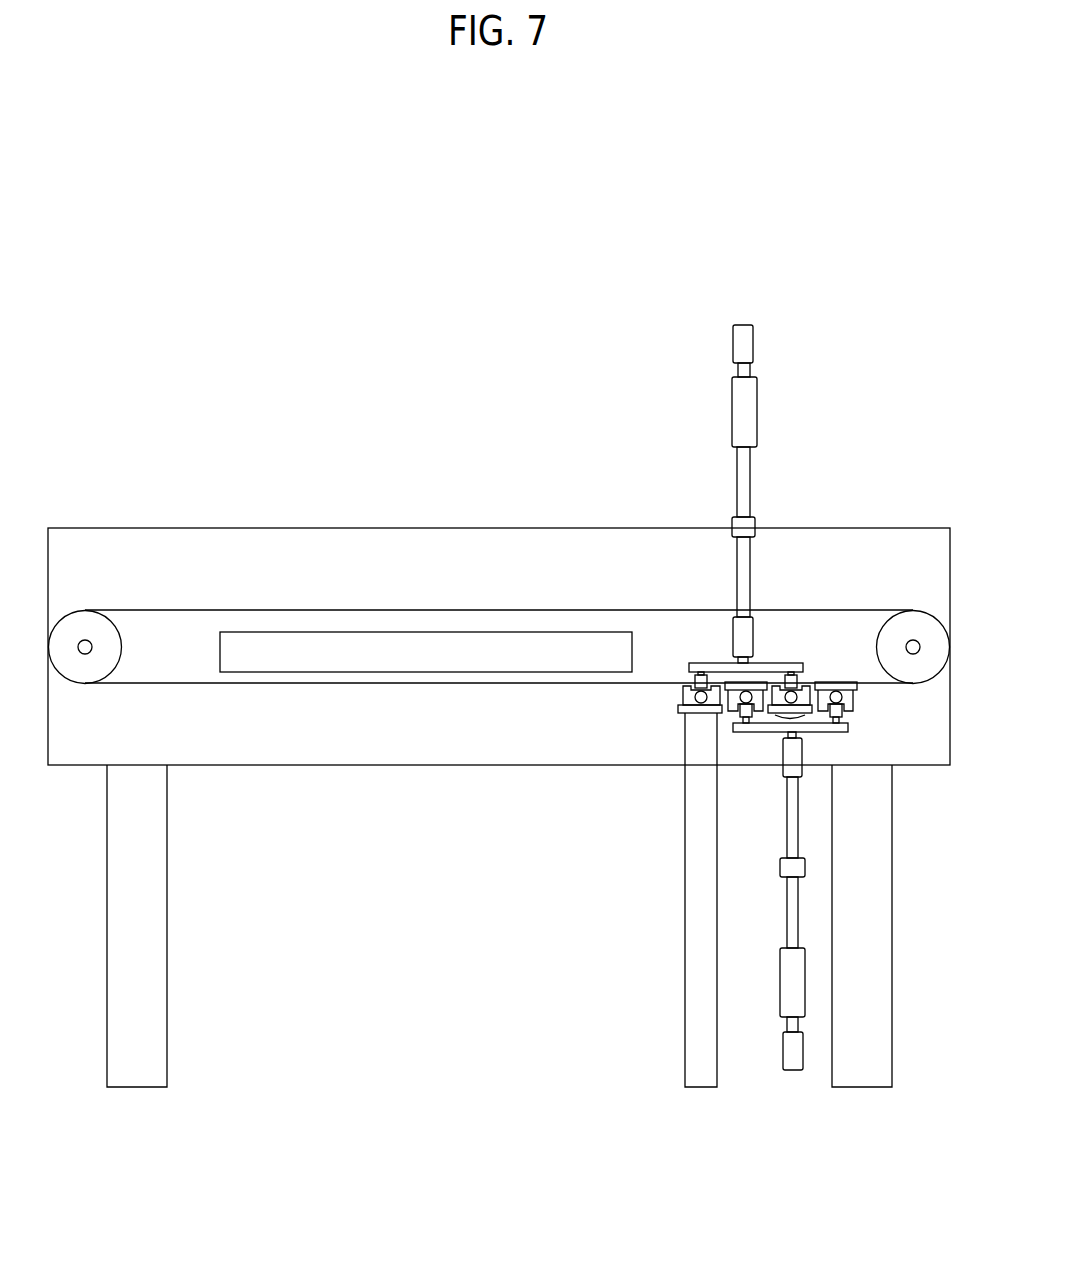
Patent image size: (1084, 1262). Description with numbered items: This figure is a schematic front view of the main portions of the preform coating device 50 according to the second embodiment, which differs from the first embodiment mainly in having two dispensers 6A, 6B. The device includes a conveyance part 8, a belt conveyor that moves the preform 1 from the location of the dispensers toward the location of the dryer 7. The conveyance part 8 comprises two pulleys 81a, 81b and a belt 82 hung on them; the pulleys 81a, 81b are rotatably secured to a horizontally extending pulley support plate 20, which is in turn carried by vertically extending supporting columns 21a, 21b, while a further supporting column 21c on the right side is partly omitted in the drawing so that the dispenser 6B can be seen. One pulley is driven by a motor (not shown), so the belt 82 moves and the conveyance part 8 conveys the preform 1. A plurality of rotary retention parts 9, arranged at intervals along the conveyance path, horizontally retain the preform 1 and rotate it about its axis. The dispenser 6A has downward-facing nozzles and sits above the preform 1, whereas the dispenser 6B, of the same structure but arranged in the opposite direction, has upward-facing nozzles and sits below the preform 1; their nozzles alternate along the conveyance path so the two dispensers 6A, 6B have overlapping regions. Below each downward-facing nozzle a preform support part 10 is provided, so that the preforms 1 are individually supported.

The preform coating device 50 is at (177, 345).
The pulley support plate 20 is at (280, 765).
The supporting column 21a is at (892, 1060).
The supporting column 21b is at (167, 977).
The supporting column 21c is at (685, 1044).
The conveyance part 8 is at (440, 699).
The belt 82 is at (532, 610).
The pulley 81a is at (936, 610).
The pulley 81b is at (72, 610).
The dryer 7 is at (433, 631).
The dispenser 6A is at (752, 483).
The dispenser 6B is at (802, 903).
The preform 1 is at (840, 695).
The rotary retention part 9 is at (683, 693).
The preform support part 10 is at (780, 712).